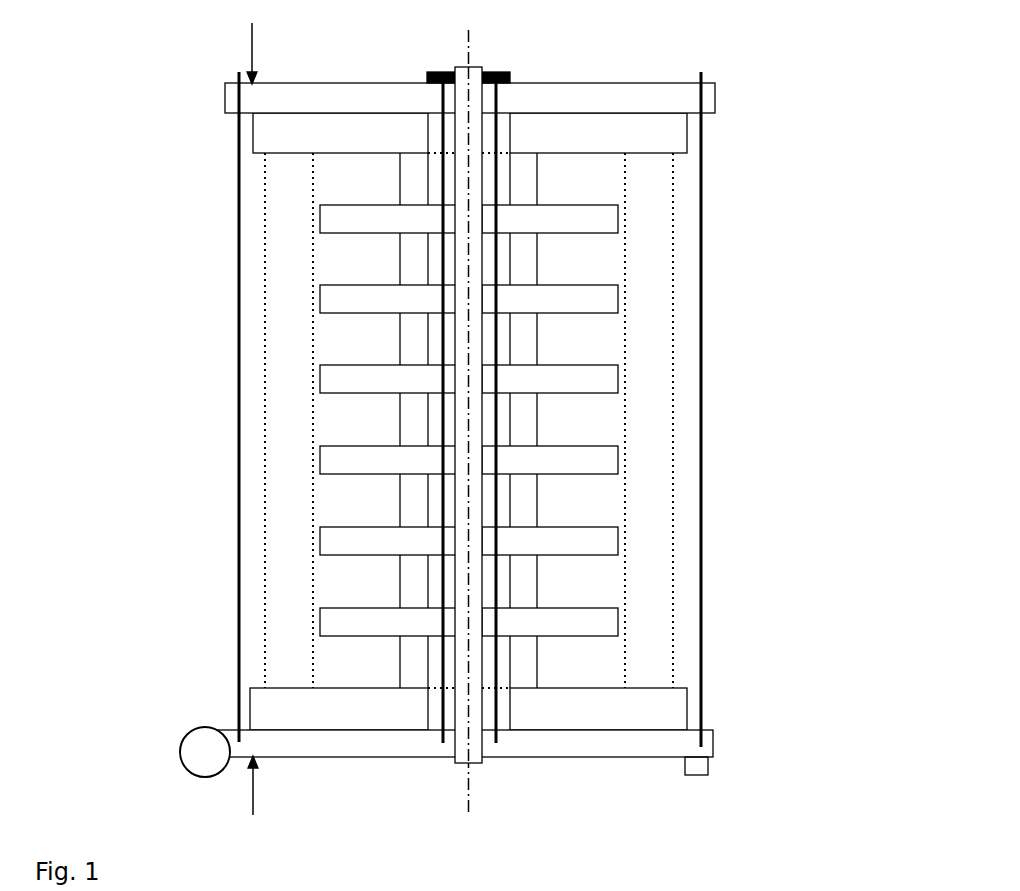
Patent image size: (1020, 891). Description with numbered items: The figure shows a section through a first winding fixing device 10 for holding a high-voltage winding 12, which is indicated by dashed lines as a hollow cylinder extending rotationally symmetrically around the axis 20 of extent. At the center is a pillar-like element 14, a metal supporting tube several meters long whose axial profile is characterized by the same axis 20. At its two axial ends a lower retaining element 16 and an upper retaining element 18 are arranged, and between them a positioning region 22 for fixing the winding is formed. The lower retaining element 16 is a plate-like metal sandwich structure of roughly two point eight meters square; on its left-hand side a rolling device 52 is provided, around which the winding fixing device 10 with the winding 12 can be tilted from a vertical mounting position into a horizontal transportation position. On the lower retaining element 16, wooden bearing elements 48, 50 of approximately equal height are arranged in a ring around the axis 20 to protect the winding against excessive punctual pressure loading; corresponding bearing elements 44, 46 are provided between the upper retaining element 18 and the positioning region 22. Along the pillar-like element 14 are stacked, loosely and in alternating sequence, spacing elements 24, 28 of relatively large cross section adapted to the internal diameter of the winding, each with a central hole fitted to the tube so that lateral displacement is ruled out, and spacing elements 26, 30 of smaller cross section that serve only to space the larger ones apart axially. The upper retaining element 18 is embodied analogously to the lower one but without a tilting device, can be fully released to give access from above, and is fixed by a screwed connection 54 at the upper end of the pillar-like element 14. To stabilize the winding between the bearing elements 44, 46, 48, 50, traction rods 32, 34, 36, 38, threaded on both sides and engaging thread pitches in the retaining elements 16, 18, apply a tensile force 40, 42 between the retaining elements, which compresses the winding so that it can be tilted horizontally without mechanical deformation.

The winding fixing device 10 is at (809, 835).
The high-voltage winding 12 is at (655, 272).
The pillar-like element 14 is at (472, 755).
The lower retaining element 16 is at (560, 745).
The upper retaining element 18 is at (667, 100).
The axis of extent 20 is at (467, 43).
The positioning region 22 is at (348, 582).
The spacing element 24 is at (335, 301).
The spacing element 26 is at (412, 340).
The spacing element 28 is at (337, 378).
The spacing element 30 is at (412, 427).
The traction rod 32 is at (238, 188).
The traction rod 34 is at (443, 97).
The traction rod 36 is at (497, 102).
The traction rod 38 is at (701, 170).
The tensile force 40 is at (255, 43).
The tensile force 42 is at (253, 803).
The bearing element 44 is at (263, 133).
The bearing element 46 is at (665, 137).
The bearing element 48 is at (268, 707).
The bearing element 50 is at (665, 708).
The rolling device 52 is at (206, 741).
The screwed connection 54 is at (510, 75).